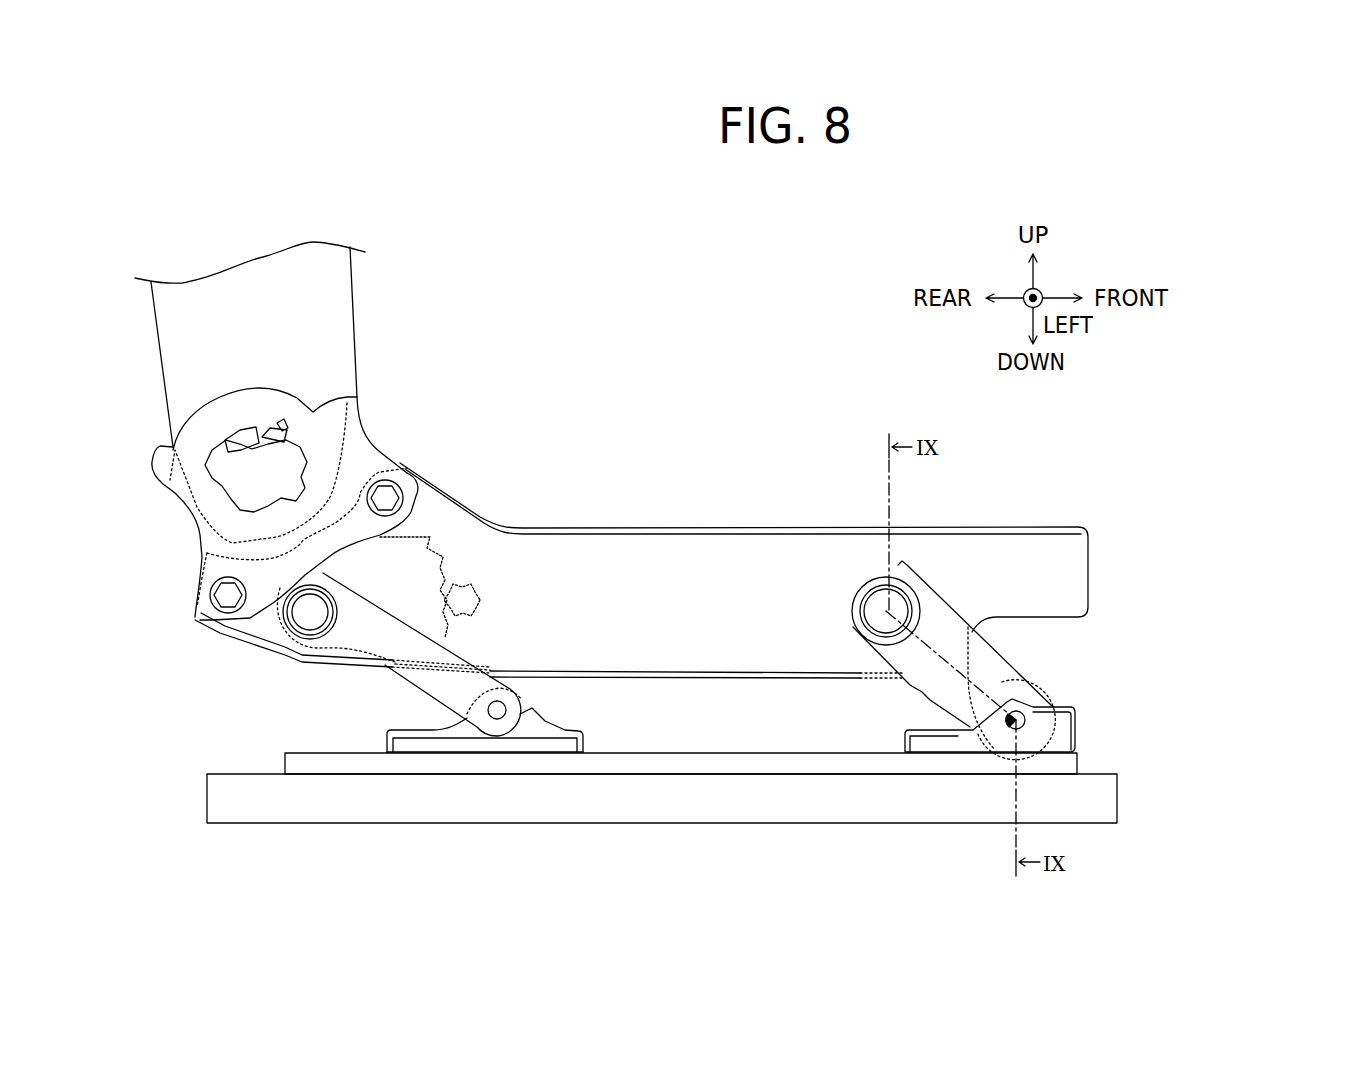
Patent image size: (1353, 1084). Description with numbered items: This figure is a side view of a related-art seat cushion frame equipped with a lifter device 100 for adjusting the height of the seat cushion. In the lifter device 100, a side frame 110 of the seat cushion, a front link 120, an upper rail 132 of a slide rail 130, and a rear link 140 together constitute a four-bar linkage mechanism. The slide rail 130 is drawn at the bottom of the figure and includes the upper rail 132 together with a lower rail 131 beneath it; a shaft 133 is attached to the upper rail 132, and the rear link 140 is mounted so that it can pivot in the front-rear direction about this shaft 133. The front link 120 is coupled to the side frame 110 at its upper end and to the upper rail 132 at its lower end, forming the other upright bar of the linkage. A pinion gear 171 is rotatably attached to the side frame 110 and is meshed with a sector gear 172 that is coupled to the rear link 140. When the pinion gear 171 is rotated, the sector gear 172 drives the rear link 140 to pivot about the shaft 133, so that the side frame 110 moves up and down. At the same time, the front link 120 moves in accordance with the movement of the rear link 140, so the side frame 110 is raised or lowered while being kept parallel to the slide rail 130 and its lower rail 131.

The lifter device 100 is at (695, 441).
The side frame 110 is at (1075, 577).
The front link 120 is at (997, 667).
The slide rail 130 is at (1208, 740).
The base plate 131 is at (1102, 797).
The upper rail 132 is at (1063, 763).
The shaft 133 is at (497, 720).
The rear link 140 is at (437, 692).
The pinion gear 171 is at (483, 601).
The sector gear 172 is at (457, 557).